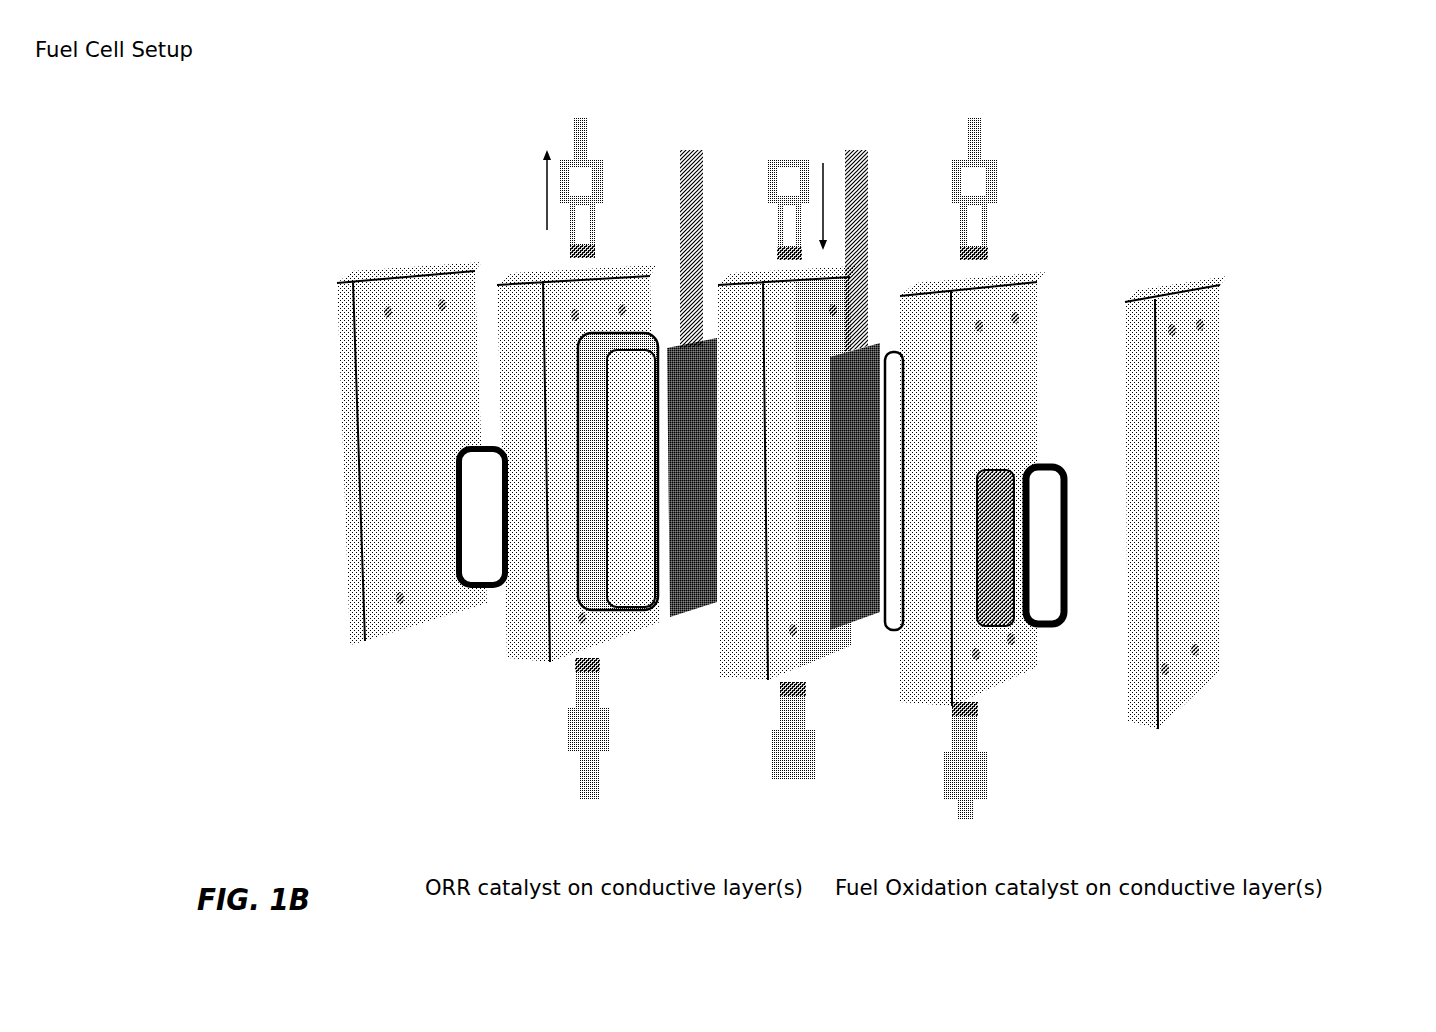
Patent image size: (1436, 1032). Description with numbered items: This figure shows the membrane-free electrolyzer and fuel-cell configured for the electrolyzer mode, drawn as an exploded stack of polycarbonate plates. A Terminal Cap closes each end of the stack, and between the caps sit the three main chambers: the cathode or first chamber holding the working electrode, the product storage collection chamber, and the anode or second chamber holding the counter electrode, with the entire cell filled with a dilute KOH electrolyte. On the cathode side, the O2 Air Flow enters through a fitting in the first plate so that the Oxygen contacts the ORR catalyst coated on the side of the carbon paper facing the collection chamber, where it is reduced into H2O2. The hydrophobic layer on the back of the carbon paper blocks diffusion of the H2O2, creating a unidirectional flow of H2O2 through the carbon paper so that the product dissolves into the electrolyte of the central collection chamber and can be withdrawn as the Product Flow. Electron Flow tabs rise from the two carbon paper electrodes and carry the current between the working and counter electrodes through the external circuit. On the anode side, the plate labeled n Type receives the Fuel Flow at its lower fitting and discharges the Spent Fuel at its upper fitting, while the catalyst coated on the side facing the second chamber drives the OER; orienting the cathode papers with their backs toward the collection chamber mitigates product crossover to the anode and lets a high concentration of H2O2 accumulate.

The terminal cap end plate Terminal Cap is at (1195, 498).
The oxygen flow Oxygen is at (768, 524).
The element H2O2 is at (742, 117).
The electron flow current collector tabs Electron Flow is at (884, 313).
The n type fuel flow-field plate n Type is at (1071, 526).
The spent fuel outlet fitting Spent Fuel is at (1023, 167).
The oxygen flow O2 Air Flow is at (555, 690).
The product Product Flow is at (828, 683).
The fuel inlet fitting Fuel Flow is at (1003, 720).